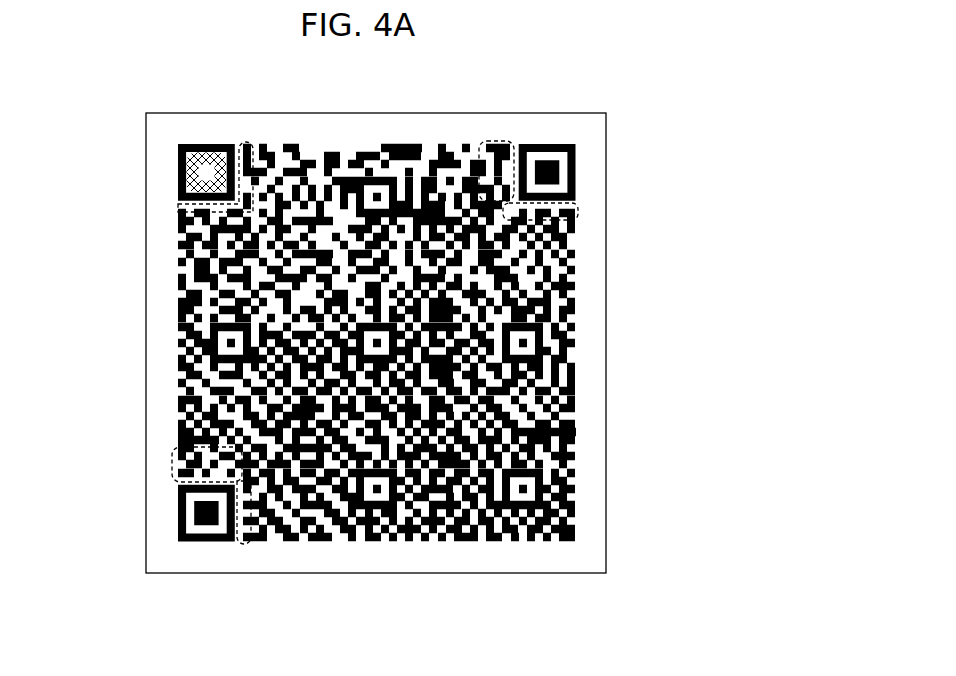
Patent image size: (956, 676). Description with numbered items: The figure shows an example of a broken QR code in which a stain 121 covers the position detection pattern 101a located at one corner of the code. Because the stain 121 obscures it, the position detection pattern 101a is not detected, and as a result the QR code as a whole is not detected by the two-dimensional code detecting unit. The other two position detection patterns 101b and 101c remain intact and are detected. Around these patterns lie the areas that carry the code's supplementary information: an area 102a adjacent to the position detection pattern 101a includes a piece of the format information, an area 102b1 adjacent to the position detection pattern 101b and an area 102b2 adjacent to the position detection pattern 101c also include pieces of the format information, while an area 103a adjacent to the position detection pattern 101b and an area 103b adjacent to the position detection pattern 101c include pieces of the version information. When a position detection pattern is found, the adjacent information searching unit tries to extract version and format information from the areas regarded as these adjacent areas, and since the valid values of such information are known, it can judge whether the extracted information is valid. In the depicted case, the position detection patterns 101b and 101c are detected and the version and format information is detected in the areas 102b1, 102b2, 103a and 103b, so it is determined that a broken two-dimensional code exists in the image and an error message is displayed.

The position detection pattern 101a is at (167, 131).
The position detection pattern 101b is at (545, 143).
The position detection pattern 101c is at (203, 542).
The stain 121 is at (178, 153).
The area adjacent to the position detection pattern 102a is at (178, 212).
The area adjacent to the position detection pattern 102b1 is at (578, 212).
The area adjacent to the position detection pattern 102b2 is at (247, 544).
The area adjacent to the position detection pattern 103a is at (497, 141).
The area adjacent to the position detection pattern 103b is at (175, 462).